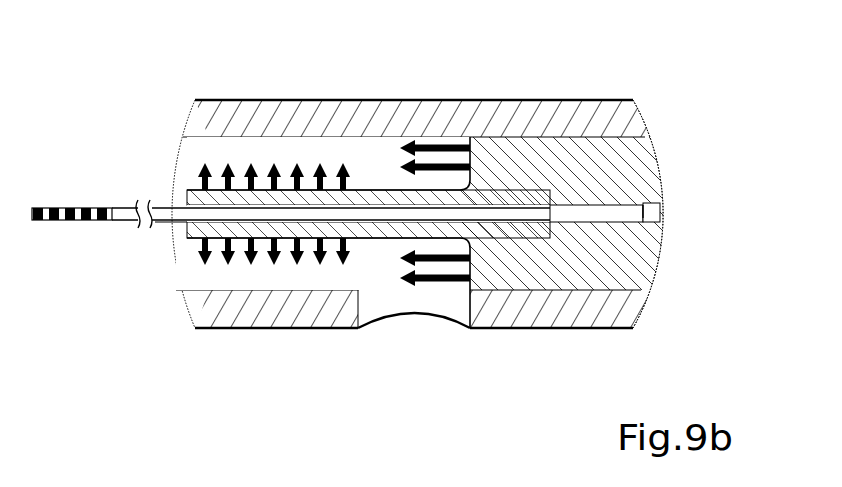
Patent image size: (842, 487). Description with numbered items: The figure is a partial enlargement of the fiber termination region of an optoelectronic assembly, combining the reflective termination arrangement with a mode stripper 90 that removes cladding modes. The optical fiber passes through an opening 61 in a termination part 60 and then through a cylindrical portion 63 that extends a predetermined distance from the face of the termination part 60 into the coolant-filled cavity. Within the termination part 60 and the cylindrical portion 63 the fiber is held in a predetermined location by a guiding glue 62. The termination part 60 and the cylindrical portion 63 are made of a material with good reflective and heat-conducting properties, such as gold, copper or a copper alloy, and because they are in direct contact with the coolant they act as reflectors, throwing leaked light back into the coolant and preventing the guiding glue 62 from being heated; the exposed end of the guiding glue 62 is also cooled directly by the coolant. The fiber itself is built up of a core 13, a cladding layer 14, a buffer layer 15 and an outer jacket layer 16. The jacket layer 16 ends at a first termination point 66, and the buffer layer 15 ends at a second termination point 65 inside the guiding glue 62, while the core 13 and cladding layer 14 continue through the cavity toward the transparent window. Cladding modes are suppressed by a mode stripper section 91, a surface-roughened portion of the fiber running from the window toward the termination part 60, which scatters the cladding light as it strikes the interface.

The mode stripper 90 is at (76, 203).
The mode stripper section 91 is at (65, 222).
The core 13 is at (328, 242).
The cladding layer 14 is at (163, 222).
The buffer layer 15 is at (602, 222).
The outer jacket layer 16 is at (660, 224).
The termination part 60 is at (637, 162).
The opening 61 is at (672, 179).
The guiding glue 62 is at (562, 225).
The cylindrical portion 63 is at (287, 233).
The second termination point 65 is at (550, 222).
The first termination point 66 is at (643, 222).